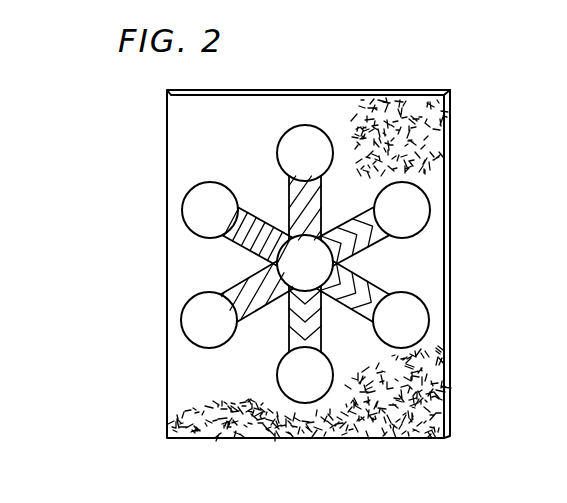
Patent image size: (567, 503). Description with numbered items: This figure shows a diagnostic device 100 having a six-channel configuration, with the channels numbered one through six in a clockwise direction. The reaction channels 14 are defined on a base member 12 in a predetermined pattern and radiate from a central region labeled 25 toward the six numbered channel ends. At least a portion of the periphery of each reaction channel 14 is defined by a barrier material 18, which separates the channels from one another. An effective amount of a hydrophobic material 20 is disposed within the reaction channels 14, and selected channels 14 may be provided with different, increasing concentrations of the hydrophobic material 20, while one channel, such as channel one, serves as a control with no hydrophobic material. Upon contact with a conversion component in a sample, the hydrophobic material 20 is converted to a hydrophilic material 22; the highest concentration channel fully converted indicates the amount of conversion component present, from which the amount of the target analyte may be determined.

The device 100 is at (477, 178).
The base member 12 is at (415, 282).
The reaction channel 14 is at (258, 241).
The barrier material 18 is at (342, 224).
The hydrophobic material 20 is at (302, 198).
The hydrophilic material 22 is at (367, 290).
The central hub node 25 is at (318, 278).